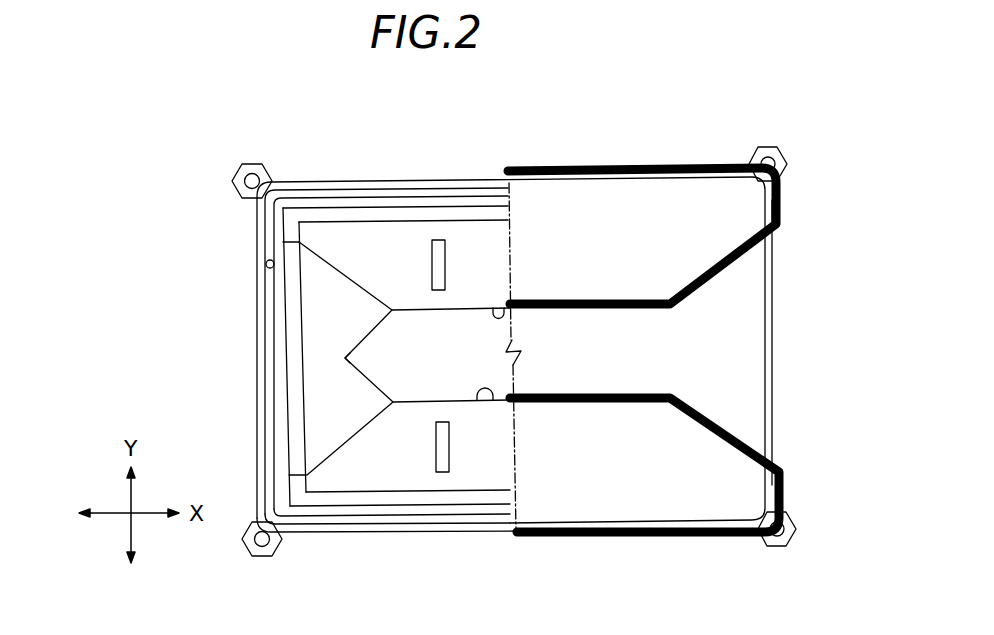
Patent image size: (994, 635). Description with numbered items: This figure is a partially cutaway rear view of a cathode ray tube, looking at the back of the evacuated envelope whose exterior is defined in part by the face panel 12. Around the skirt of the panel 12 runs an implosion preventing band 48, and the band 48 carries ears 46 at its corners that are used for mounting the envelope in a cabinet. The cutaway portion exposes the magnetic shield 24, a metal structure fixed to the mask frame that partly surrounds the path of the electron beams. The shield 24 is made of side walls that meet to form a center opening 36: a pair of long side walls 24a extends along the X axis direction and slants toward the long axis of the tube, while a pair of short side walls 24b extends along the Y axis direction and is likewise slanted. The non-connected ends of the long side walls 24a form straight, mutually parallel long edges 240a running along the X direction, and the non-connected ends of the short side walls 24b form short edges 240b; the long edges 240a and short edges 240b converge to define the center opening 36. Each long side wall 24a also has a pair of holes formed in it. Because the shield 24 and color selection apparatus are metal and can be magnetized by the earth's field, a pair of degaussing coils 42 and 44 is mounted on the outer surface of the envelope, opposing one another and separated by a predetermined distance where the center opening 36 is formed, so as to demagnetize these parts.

The panel 12 is at (266, 264).
The implosion preventing band 48 is at (258, 238).
The ears 46 is at (243, 163).
The degaussing coil 42 is at (675, 164).
The degaussing coil 44 is at (673, 537).
The magnetic shield 24 is at (328, 488).
The long side walls 24a is at (378, 243).
The short side walls 24b is at (327, 394).
The long edges 240a is at (507, 305).
The short edges 240b is at (343, 357).
The center opening 36 is at (457, 352).